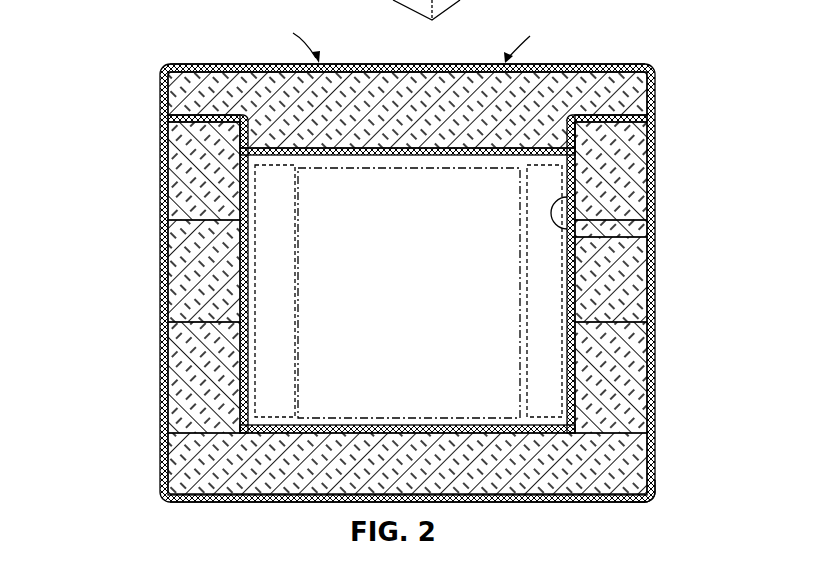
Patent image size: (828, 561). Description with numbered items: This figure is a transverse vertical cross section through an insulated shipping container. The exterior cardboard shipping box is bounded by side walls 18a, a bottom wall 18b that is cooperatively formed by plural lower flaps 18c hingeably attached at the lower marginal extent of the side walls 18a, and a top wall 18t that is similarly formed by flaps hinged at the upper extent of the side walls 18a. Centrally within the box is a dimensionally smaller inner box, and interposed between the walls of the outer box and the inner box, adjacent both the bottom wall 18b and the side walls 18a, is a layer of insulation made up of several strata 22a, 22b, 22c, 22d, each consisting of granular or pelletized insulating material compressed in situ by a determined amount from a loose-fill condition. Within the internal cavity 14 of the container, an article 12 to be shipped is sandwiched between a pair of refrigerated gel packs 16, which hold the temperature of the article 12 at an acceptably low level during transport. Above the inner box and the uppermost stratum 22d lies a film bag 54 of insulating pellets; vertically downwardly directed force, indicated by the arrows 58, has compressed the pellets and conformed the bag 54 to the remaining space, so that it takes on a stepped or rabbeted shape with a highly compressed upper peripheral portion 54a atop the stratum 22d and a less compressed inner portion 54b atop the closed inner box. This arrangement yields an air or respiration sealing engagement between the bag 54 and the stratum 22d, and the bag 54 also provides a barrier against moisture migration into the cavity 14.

The article 12 is at (412, 295).
The internal cavity 14 is at (645, 233).
The refrigerated gel packs 16 is at (288, 295).
The side walls 18a is at (163, 284).
The bottom wall 18b is at (615, 503).
The lower flaps 18c is at (540, 503).
The top wall 18t is at (597, 66).
The stratum of insulating material 22a is at (185, 455).
The stratum of insulating material 22b is at (185, 350).
The stratum of insulating material 22c is at (185, 236).
The stratum of insulating material 22d is at (185, 163).
The bag 54 is at (348, 108).
The upper peripheral portion 54a is at (163, 86).
The inner portion 54b is at (396, 110).
The arrows 58 is at (406, 39).